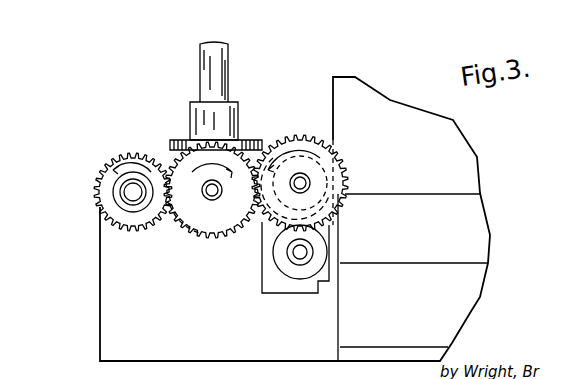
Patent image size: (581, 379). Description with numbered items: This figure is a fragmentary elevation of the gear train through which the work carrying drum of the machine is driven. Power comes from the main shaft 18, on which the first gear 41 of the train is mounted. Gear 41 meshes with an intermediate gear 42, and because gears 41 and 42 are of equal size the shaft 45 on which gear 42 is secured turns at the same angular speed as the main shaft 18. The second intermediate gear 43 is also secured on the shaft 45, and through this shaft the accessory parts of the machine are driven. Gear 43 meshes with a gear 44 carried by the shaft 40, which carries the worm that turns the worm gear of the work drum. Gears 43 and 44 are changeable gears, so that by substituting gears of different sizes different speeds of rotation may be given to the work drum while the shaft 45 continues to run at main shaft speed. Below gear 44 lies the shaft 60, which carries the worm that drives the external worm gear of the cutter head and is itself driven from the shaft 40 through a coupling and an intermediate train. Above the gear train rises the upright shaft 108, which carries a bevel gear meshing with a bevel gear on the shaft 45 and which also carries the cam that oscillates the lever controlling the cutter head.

The upright shaft 108 is at (219, 73).
The gear 41 is at (97, 184).
The main shaft 18 is at (133, 192).
The intermediate gear 42 is at (176, 228).
The intermediate gear 43 is at (198, 232).
The shaft 45 is at (212, 190).
The gear 44 is at (275, 212).
The shaft 40 is at (306, 186).
The shaft 60 is at (300, 252).